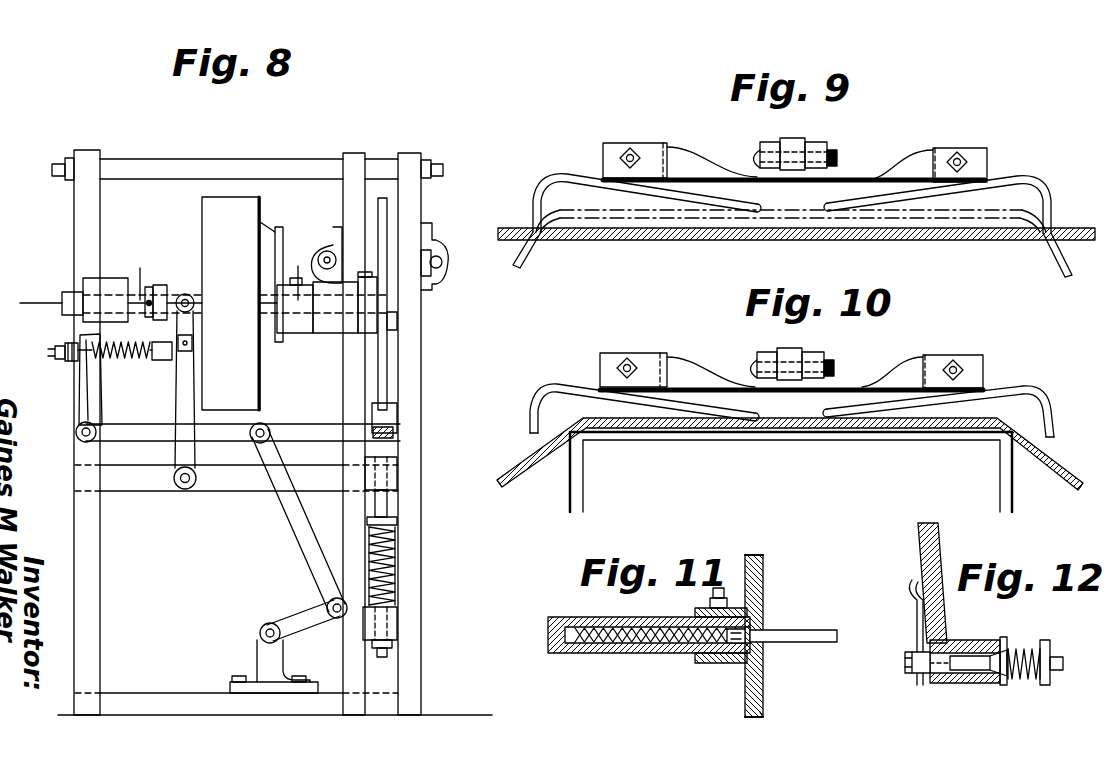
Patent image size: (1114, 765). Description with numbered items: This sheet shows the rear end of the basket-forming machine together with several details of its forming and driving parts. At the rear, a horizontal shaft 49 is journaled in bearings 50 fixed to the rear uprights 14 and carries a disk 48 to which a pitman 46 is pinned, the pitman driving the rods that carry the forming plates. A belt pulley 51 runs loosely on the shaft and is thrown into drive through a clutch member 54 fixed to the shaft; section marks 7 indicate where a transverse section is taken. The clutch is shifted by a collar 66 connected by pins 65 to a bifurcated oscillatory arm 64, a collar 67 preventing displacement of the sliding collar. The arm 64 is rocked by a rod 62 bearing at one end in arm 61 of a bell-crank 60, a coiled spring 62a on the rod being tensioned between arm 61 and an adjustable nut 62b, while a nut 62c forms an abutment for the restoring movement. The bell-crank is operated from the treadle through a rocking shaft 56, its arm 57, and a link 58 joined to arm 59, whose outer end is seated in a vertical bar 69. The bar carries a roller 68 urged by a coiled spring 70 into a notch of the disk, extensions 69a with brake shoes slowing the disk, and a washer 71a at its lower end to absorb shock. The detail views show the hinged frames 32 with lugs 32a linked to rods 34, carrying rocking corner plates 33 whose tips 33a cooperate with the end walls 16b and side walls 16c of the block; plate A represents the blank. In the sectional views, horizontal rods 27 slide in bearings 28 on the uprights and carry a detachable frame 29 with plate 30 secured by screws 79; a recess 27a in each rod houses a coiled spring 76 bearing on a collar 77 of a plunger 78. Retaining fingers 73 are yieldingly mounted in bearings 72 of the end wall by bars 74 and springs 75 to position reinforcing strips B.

In FIG. 8, the section line 7 is at (224, 270).
In FIG. 8, the rear uprights 14 is at (80, 215).
In FIG. 10, the end wall of block 16b is at (573, 494).
In FIG. 12, the end wall of block 16b is at (930, 548).
In FIG. 10, the side wall of block 16c is at (780, 430).
In FIG. 8, the horizontally disposed rods 27 is at (327, 256).
In FIG. 11, the horizontally disposed rods 27 is at (563, 617).
In FIG. 11, the recesses 27a is at (610, 654).
In FIG. 8, the bearings 28 is at (440, 256).
In FIG. 11, the detachable frame 29 is at (747, 683).
In FIG. 11, the plate 30 is at (762, 713).
In FIG. 9, the frames 32 is at (942, 153).
In FIG. 10, the frames 32 is at (680, 367).
In FIG. 9, the ears or lugs 32a is at (766, 143).
In FIG. 10, the ears or lugs 32a is at (763, 357).
In FIG. 9, the rocking corner plates 33 is at (565, 177).
In FIG. 10, the rocking corner plates 33 is at (562, 387).
In FIG. 9, the spring end 33a is at (538, 212).
In FIG. 10, the spring end 33a is at (536, 420).
In FIG. 9, the rods 34 is at (808, 128).
In FIG. 10, the rods 34 is at (792, 352).
In FIG. 8, the link or pitman 46 is at (398, 318).
In FIG. 8, the disk 48 is at (386, 214).
In FIG. 8, the horizontal shaft 49 is at (66, 300).
In FIG. 8, the bearings 50 is at (330, 334).
In FIG. 8, the belt pulley 51 is at (212, 222).
In FIG. 8, the clutch member 54 is at (275, 238).
In FIG. 8, the rocking shaft 56 is at (265, 630).
In FIG. 8, the arm 57 is at (306, 616).
In FIG. 8, the link 58 is at (298, 521).
In FIG. 8, the arm of bell-crank 59 is at (300, 432).
In FIG. 8, the bell-crank 60 is at (94, 440).
In FIG. 8, the arm of bell-crank 61 is at (83, 396).
In FIG. 8, the rod or bolt 62 is at (55, 352).
In FIG. 8, the coiled spring 62a is at (128, 360).
In FIG. 8, the adjustable nut 62b is at (160, 358).
In FIG. 8, the nut 62c is at (66, 346).
In FIG. 8, the oscillatory arm 64 is at (180, 403).
In FIG. 8, the screws or pins 65 is at (194, 300).
In FIG. 8, the collar 66 is at (162, 286).
In FIG. 8, the collar 67 is at (151, 290).
In FIG. 8, the roller 68 is at (390, 415).
In FIG. 8, the bar 69 is at (395, 486).
In FIG. 8, the extensions 69a is at (395, 430).
In FIG. 8, the coiled spring 70 is at (400, 556).
In FIG. 8, the washer 71a is at (395, 648).
In FIG. 12, the bearings 72 is at (968, 684).
In FIG. 12, the retaining fingers 73 is at (917, 608).
In FIG. 12, the bars 74 is at (964, 660).
In FIG. 12, the springs 75 is at (1024, 678).
In FIG. 11, the coiled springs 76 is at (648, 654).
In FIG. 11, the collar 77 is at (765, 617).
In FIG. 11, the plunger 78 is at (810, 644).
In FIG. 11, the screws or fastening means 79 is at (764, 560).
In FIG. 9, the plate A is at (653, 240).
In FIG. 12, the reinforcing strips B is at (920, 628).